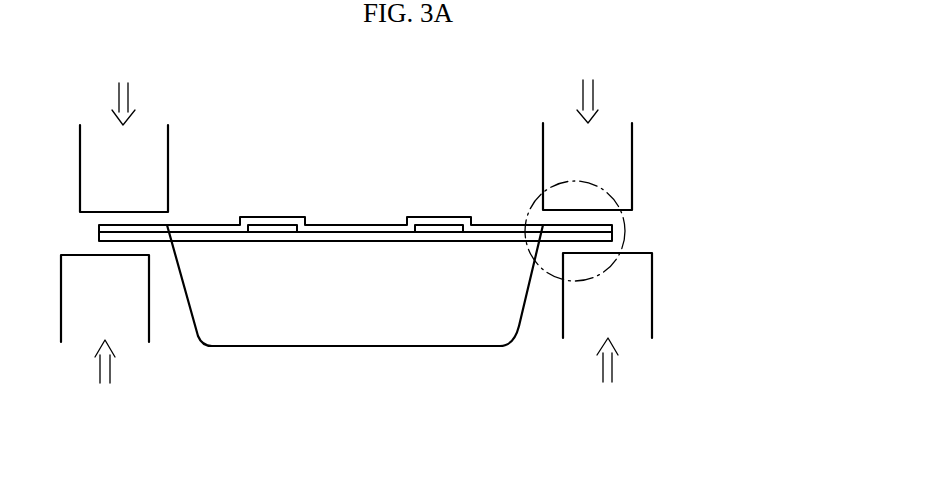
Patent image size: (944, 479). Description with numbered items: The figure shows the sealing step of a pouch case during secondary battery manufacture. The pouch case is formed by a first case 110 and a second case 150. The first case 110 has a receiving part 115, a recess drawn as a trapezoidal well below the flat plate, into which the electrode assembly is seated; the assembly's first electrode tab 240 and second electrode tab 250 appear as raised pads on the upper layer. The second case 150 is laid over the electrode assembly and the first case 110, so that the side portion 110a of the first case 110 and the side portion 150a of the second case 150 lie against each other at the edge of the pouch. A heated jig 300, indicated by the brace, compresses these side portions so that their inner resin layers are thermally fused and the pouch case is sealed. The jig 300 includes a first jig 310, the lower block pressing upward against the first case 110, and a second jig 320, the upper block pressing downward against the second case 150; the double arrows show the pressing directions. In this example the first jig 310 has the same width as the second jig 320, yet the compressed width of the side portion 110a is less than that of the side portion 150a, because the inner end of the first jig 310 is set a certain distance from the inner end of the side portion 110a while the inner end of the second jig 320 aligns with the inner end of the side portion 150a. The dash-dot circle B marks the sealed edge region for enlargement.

The first case 110 is at (350, 346).
The side portion of the first case 110a is at (612, 233).
The receiving part 115 is at (520, 323).
The second case 150 is at (345, 225).
The side portion of the second case 150a is at (610, 225).
The first electrode tab 240 is at (435, 227).
The second electrode tab 250 is at (265, 227).
The jig 300 is at (428, 231).
The first jig 310 is at (650, 295).
The second jig 320 is at (625, 173).
The enlarged detail region B is at (533, 205).